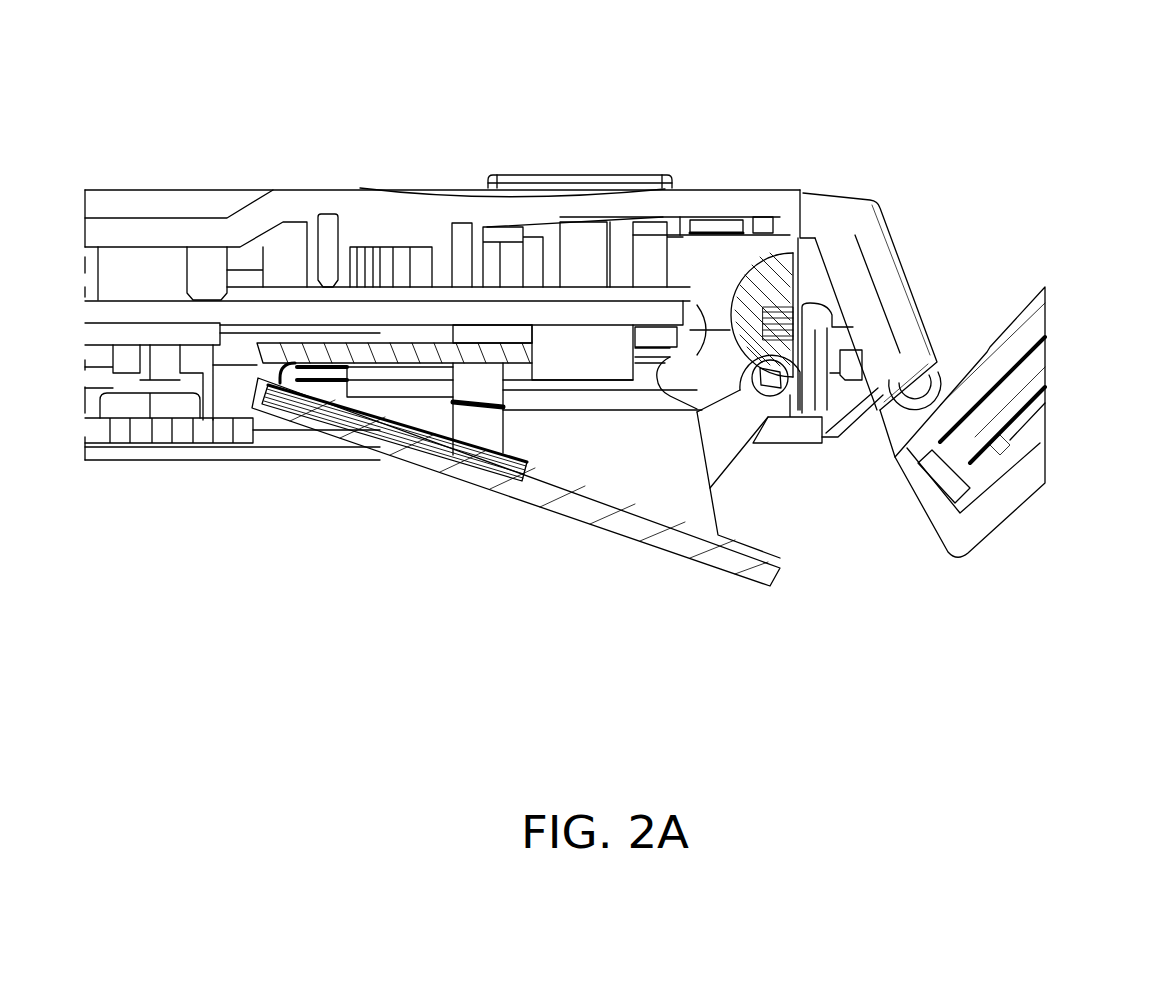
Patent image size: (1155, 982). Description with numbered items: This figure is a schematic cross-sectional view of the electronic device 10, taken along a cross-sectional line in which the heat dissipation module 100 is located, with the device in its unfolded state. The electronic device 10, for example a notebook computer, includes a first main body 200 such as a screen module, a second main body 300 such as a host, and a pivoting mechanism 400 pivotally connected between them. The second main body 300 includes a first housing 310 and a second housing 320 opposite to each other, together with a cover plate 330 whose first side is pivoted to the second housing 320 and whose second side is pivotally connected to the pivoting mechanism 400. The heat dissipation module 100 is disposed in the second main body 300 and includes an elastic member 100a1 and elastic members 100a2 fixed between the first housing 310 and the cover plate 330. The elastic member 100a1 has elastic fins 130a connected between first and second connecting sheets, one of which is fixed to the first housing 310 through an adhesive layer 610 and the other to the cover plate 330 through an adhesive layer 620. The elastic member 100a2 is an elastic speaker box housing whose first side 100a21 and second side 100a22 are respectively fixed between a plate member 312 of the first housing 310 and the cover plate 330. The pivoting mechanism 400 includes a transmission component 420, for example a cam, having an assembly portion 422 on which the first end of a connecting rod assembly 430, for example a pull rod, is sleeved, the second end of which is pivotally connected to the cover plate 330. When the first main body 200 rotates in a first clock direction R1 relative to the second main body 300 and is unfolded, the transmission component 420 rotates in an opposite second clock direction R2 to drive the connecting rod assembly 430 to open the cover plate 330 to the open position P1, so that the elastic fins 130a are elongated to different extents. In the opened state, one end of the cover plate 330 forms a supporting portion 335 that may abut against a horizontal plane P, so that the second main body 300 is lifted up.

The electronic device 10 is at (975, 605).
The heat dissipation module 100 is at (442, 417).
The elastic member 100a1 is at (519, 430).
The elastic member 100a2 is at (637, 495).
The first side 100a21 is at (652, 344).
The second side 100a22 is at (679, 530).
The elastic fin 130a is at (320, 392).
The first main body 200 is at (1013, 490).
The second main body 300 is at (652, 379).
The first housing 310 is at (652, 244).
The plate member 312 is at (490, 333).
The second housing 320 is at (792, 430).
The cover plate 330 is at (755, 568).
The supporting portion 335 is at (768, 590).
The pivoting mechanism 400 is at (921, 389).
The transmission component 420 is at (770, 280).
The assembly portion 422 is at (773, 390).
The connecting rod assembly 430 is at (727, 450).
The adhesive layer 610 is at (273, 351).
The adhesive layer 620 is at (347, 405).
The horizontal plane P is at (672, 587).
The open position P1 is at (1056, 113).
The first clock direction R1 is at (975, 197).
The second clock direction R2 is at (713, 387).